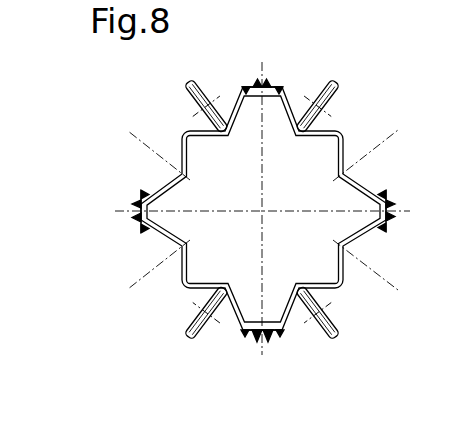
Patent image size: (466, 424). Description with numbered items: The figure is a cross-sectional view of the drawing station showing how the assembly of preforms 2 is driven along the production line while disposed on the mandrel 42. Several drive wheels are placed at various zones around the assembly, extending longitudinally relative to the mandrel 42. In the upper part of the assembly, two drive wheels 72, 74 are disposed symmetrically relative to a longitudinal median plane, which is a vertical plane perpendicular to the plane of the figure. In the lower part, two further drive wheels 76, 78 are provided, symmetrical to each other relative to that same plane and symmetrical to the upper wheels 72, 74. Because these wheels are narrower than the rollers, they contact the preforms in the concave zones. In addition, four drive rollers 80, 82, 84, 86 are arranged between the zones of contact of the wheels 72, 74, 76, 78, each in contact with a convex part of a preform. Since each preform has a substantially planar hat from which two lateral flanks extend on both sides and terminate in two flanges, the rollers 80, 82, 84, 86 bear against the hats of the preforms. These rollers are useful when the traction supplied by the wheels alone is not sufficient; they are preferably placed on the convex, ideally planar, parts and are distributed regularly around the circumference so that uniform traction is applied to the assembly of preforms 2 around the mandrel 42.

The hollow profile body 2 is at (165, 169).
The mandrel 42 is at (278, 222).
The drive wheel 72 is at (193, 102).
The drive wheel 74 is at (333, 100).
The drive wheel 76 is at (192, 313).
The drive wheel 78 is at (331, 322).
The drive roller 80 is at (263, 73).
The drive roller 82 is at (116, 221).
The drive roller 84 is at (254, 350).
The drive roller 86 is at (404, 203).